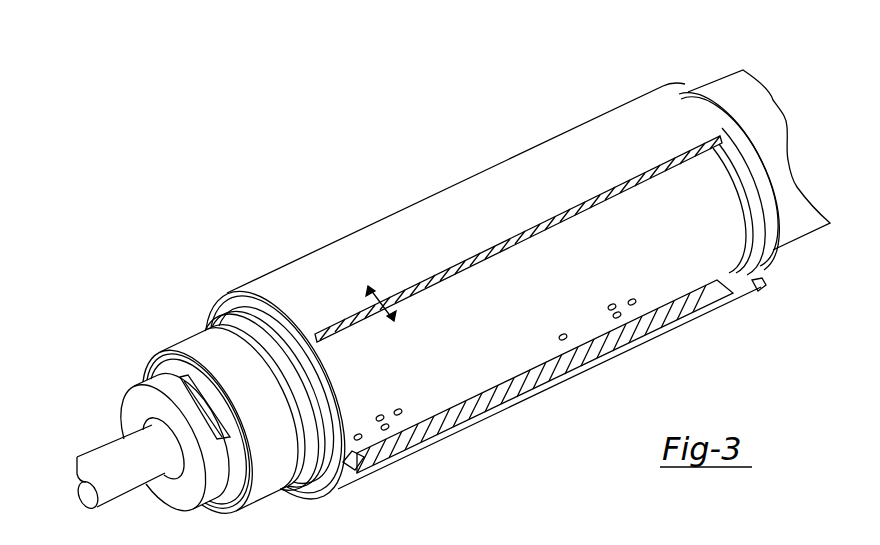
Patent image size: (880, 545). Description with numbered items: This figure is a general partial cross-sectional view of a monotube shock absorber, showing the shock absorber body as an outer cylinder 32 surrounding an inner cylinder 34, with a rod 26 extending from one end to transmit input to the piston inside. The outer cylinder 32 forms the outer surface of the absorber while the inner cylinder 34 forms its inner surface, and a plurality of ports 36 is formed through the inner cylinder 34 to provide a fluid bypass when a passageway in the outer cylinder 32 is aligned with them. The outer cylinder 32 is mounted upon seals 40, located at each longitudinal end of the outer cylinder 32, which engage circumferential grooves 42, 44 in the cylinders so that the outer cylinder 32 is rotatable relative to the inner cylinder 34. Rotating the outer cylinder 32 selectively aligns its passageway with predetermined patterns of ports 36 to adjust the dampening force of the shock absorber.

The rod 26 is at (143, 476).
The outer cylinder 32 is at (357, 248).
The inner cylinder 34 is at (555, 293).
The ports 36 is at (403, 411).
The seals 40 is at (355, 468).
The circumferential groove 42 is at (748, 187).
The circumferential groove 44 is at (313, 373).